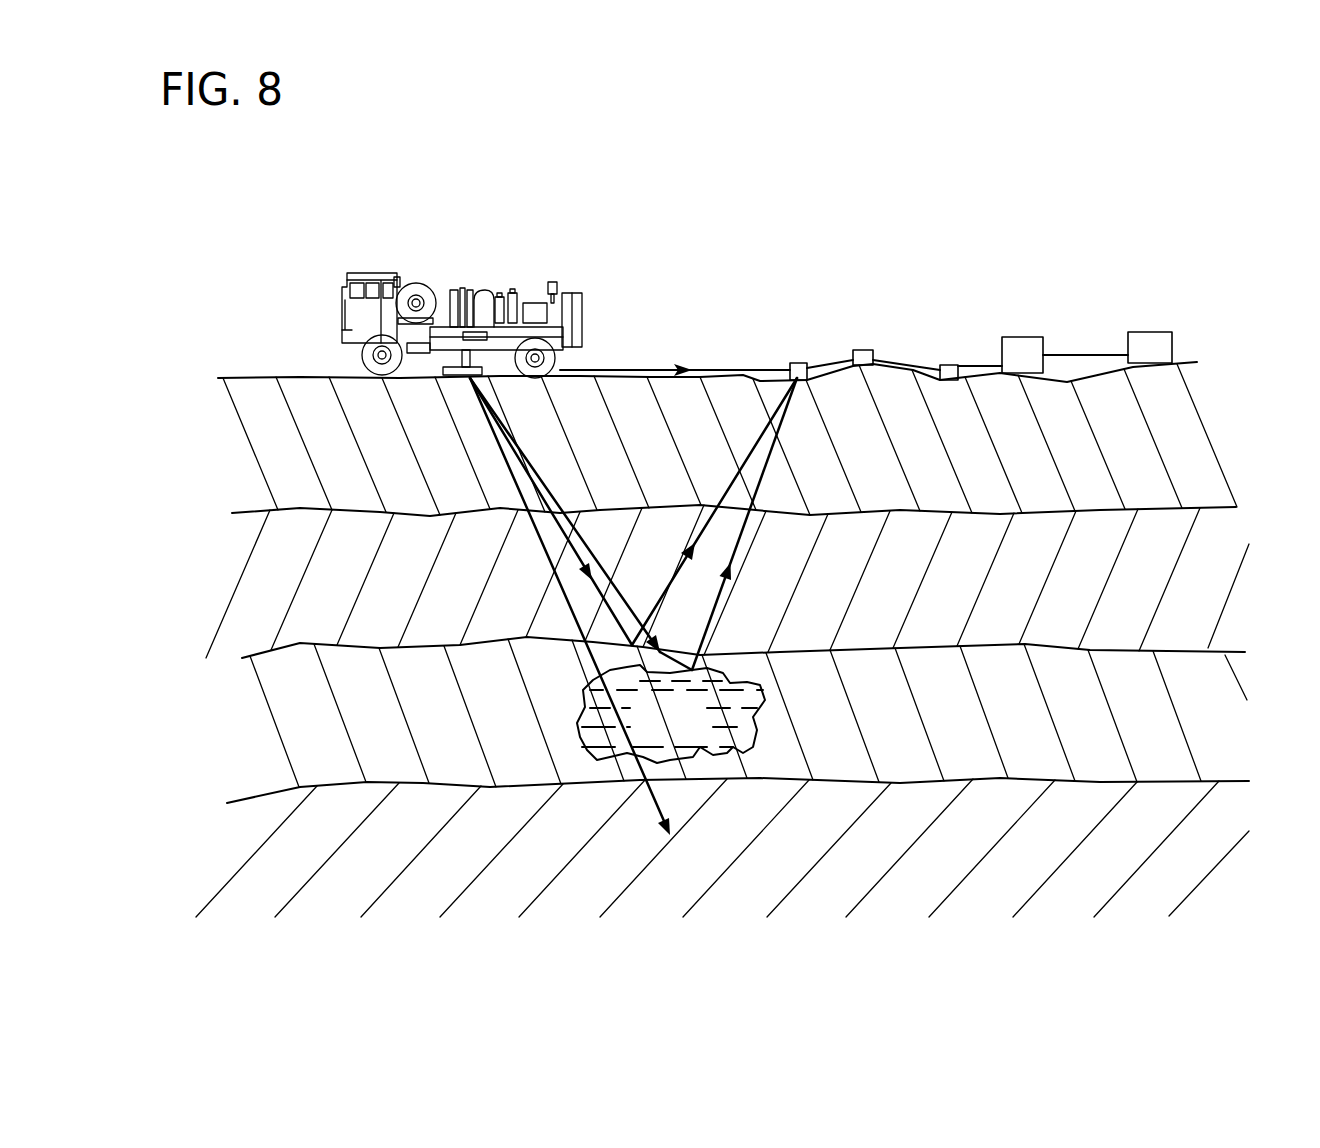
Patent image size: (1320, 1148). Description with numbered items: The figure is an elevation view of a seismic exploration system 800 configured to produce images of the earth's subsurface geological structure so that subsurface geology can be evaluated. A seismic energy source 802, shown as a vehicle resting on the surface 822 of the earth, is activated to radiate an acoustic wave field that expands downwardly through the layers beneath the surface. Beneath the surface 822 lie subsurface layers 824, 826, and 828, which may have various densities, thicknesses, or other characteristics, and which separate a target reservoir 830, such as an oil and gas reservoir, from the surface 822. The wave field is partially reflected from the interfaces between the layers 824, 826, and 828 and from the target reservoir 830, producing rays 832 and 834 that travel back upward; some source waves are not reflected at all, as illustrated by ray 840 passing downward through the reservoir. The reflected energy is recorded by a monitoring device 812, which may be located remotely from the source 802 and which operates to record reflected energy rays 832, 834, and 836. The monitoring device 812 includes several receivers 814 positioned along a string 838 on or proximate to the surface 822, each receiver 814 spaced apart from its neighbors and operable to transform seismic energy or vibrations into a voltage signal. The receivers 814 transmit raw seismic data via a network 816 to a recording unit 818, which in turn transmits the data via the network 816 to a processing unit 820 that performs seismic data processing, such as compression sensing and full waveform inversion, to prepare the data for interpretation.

The seismic exploration system 800 is at (460, 165).
The seismic energy source 802 is at (572, 293).
The monitoring device 812 is at (1090, 300).
The receiver 814 is at (800, 363).
The network 816 is at (1092, 355).
The recording unit 818 is at (1025, 337).
The processing unit 820 is at (1148, 332).
The surface 822 is at (655, 365).
The subsurface layer 824 is at (307, 484).
The subsurface layer 826 is at (279, 613).
The subsurface layer 828 is at (269, 763).
The target reservoir 830 is at (688, 728).
The ray 832 is at (588, 574).
The ray 834 is at (714, 612).
The reflected energy ray 836 is at (713, 370).
The string 838 is at (908, 363).
The ray 840 is at (652, 802).